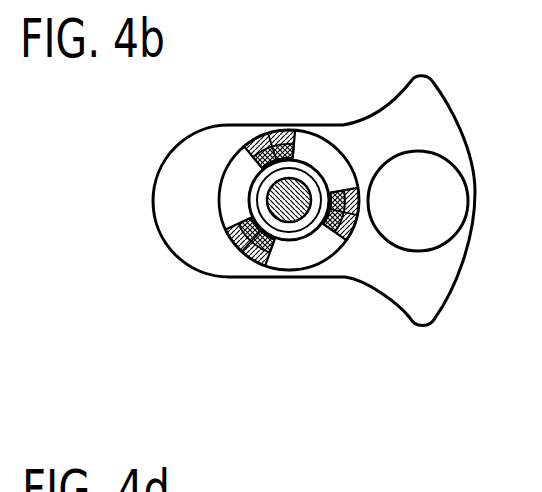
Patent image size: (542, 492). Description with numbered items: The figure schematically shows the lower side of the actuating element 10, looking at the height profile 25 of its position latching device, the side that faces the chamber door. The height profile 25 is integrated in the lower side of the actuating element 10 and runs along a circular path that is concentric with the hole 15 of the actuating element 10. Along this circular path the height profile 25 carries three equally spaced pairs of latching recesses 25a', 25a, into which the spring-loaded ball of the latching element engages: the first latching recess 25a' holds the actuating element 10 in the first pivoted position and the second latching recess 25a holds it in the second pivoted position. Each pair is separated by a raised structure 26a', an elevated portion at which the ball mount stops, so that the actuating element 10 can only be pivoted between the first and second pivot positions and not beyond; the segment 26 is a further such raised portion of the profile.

The actuating element 10 is at (453, 108).
The hole 15 is at (285, 220).
The height profile 25 is at (221, 191).
The latching recess 25a is at (349, 268).
The first latching recess 25a' is at (349, 151).
The bearing segment 26 is at (264, 135).
The raised structure 26a' is at (416, 279).